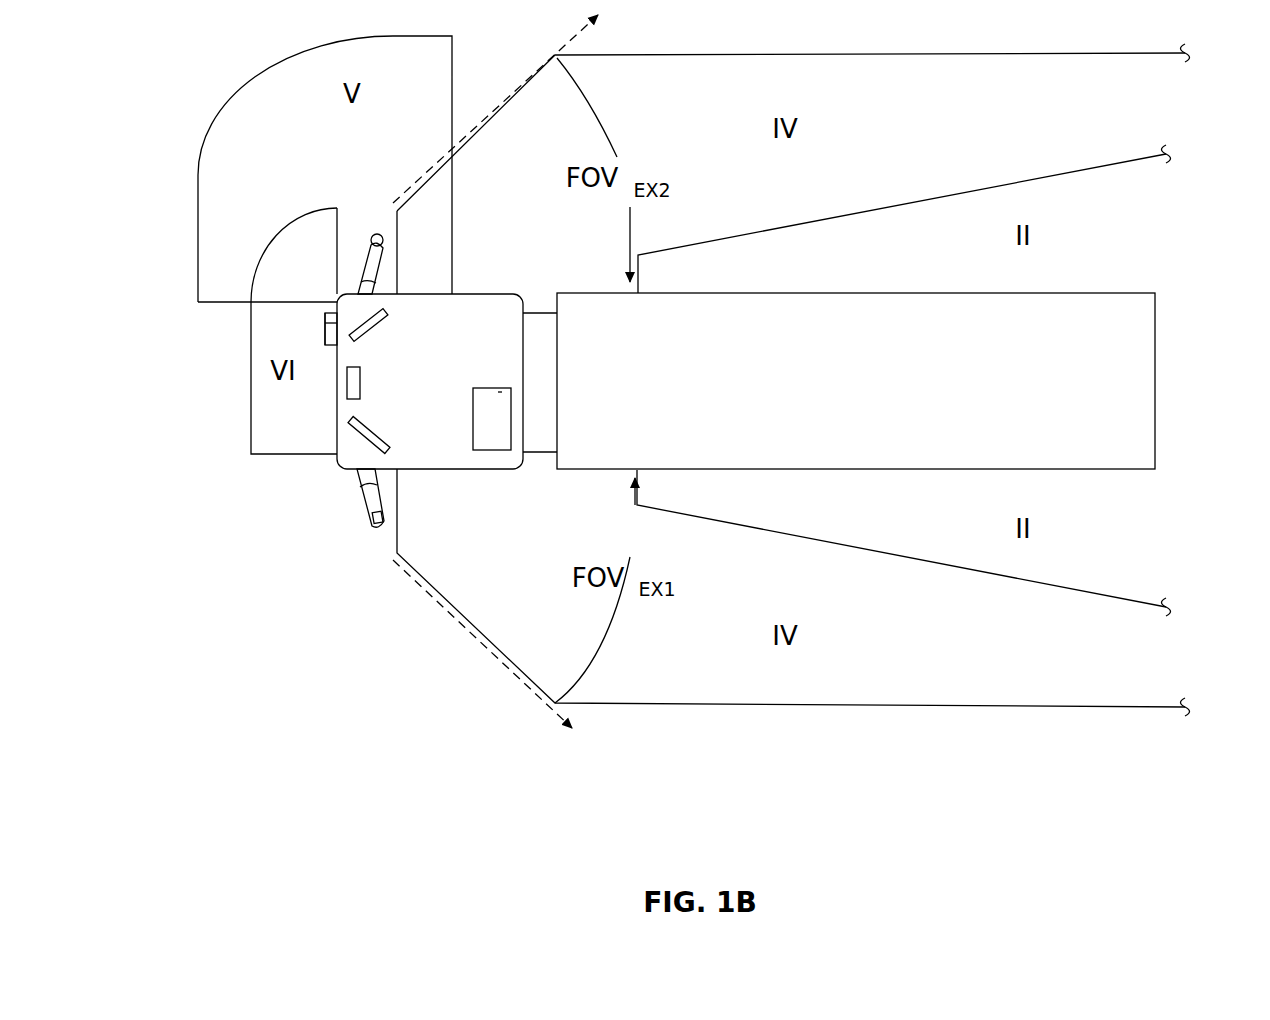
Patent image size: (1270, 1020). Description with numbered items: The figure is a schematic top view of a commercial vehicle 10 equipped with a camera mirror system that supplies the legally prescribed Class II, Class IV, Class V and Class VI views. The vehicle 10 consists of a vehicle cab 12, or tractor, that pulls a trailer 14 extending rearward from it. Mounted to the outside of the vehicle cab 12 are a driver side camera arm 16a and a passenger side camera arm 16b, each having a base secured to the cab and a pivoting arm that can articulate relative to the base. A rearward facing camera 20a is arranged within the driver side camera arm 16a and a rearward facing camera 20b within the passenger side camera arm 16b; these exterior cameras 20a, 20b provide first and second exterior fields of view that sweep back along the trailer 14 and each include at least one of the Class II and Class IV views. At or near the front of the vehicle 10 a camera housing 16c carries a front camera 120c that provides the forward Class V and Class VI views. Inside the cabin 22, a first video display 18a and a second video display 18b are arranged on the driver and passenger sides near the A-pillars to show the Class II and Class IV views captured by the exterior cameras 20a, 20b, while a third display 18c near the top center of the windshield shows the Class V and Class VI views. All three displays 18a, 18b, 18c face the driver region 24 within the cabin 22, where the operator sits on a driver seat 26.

The commercial vehicle 10 is at (312, 274).
The vehicle cab 12 is at (330, 465).
The trailer 14 is at (1104, 278).
The driver side camera arm 16a is at (372, 509).
The passenger side camera arm 16b is at (366, 254).
The camera housing 16c is at (325, 330).
The first video display 18a is at (380, 438).
The second video display 18b is at (374, 331).
The third display 18c is at (345, 387).
The rearward facing camera 20a is at (383, 519).
The rearward facing camera 20b is at (384, 247).
The third light source 120c is at (325, 322).
The cabin 22 is at (490, 304).
The driver region 24 is at (466, 409).
The driver seat 26 is at (499, 392).